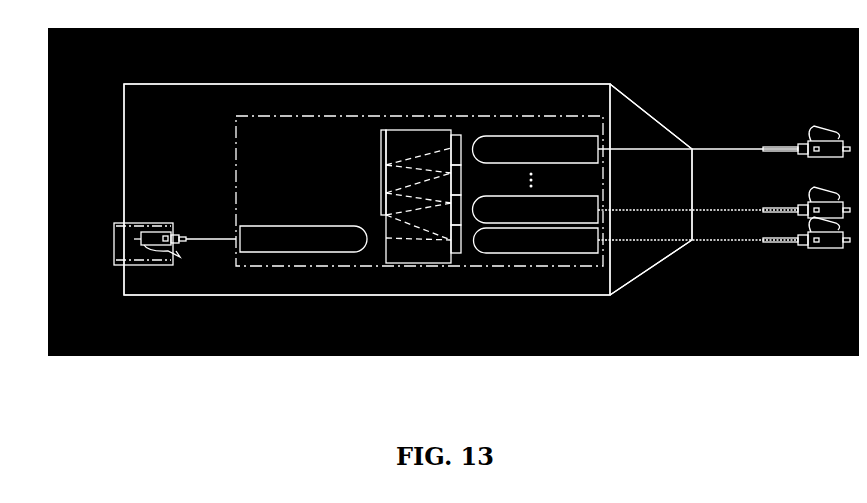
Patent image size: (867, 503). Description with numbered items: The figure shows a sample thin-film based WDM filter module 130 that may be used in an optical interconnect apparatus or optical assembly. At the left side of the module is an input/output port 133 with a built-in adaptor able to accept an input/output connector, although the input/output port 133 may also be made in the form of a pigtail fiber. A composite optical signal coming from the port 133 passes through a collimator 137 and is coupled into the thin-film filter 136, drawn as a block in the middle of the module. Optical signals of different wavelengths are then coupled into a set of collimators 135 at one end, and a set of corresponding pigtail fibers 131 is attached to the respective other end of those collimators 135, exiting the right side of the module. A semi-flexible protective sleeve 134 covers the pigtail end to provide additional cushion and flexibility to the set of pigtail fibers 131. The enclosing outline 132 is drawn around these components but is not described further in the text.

The thin-film based WDM filter module 130 is at (281, 316).
The pigtail fibers 131 is at (713, 232).
The housing 132 is at (359, 76).
The input/output port 133 is at (106, 213).
The semi-flexible protective sleeve 134 is at (643, 108).
The collimators 135 is at (502, 232).
The thin-film filter 136 is at (412, 258).
The collimator 137 is at (313, 232).